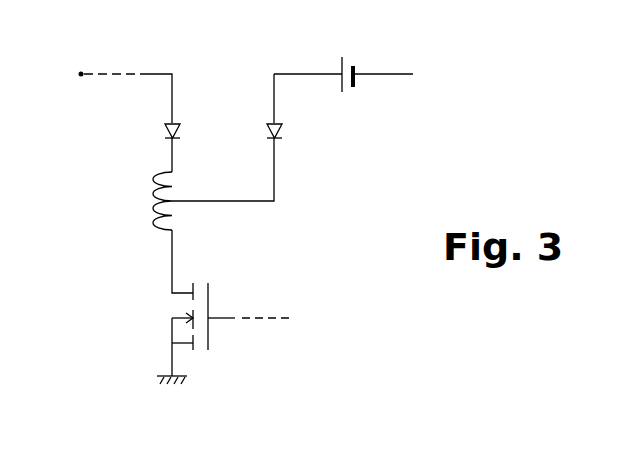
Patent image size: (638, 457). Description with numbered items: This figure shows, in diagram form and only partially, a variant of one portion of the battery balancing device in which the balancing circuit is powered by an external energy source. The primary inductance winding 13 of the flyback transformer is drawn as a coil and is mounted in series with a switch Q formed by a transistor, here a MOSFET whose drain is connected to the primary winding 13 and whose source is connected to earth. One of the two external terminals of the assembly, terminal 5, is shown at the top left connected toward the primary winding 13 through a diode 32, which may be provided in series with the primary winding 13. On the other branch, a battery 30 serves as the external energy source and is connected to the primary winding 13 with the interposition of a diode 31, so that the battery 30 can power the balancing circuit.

The external terminal 5 is at (80, 72).
The primary inductance winding 13 is at (154, 225).
The battery 30 is at (348, 93).
The diode 31 is at (282, 127).
The diode 32 is at (166, 128).
The switch Q is at (218, 307).